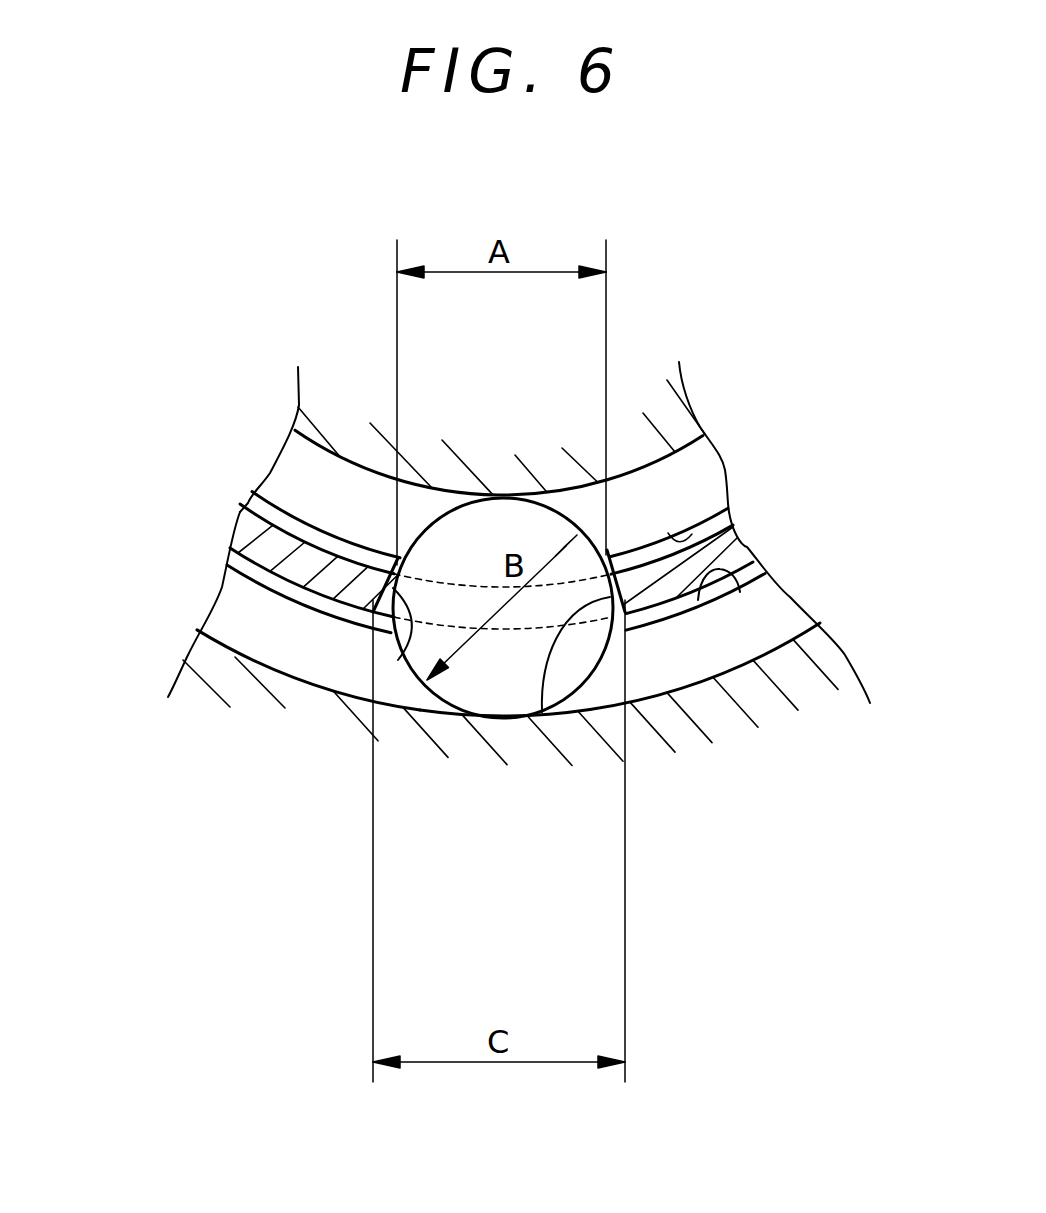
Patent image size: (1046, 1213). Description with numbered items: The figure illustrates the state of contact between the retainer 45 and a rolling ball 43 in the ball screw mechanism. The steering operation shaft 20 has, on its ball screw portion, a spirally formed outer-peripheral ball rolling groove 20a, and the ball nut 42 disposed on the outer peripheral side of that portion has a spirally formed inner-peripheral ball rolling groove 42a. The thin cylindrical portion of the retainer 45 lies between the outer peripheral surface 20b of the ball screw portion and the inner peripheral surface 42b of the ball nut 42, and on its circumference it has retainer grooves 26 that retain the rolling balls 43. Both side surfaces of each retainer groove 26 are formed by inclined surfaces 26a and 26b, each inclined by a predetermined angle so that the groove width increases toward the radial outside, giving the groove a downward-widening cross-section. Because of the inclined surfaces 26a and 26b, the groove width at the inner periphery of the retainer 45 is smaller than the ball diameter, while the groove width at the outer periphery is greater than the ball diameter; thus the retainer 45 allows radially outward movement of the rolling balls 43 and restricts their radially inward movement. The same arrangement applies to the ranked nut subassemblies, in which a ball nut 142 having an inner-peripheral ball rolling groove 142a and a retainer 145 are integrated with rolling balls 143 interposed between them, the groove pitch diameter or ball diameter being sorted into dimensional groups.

The steering operation shaft 20 is at (548, 470).
The outer-peripheral ball rolling groove 20a is at (350, 487).
The outer peripheral surface 20b is at (688, 520).
The retainer groove 26 is at (525, 612).
The inclined surface 26a is at (545, 710).
The inclined surface 26b is at (405, 662).
The ball nut 42 is at (519, 681).
The ball nut 142 is at (657, 710).
The inner-peripheral ball rolling groove 42a is at (261, 700).
The inner-peripheral ball rolling groove 142a is at (280, 645).
The inner peripheral surface 42b is at (738, 593).
The rolling ball 43 is at (513, 830).
The rolling ball 143 is at (480, 697).
The retainer 45 is at (167, 666).
The retainer 145 is at (272, 594).